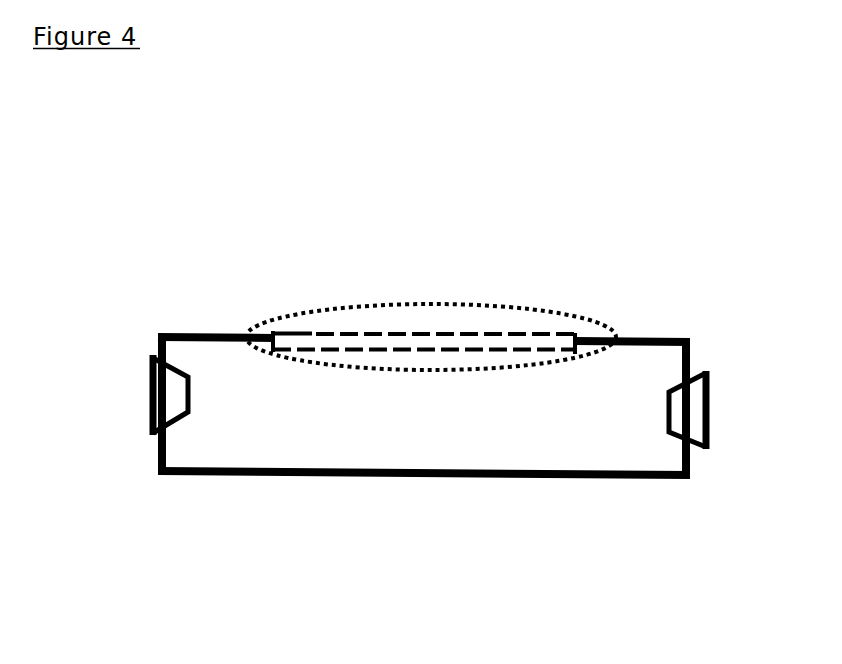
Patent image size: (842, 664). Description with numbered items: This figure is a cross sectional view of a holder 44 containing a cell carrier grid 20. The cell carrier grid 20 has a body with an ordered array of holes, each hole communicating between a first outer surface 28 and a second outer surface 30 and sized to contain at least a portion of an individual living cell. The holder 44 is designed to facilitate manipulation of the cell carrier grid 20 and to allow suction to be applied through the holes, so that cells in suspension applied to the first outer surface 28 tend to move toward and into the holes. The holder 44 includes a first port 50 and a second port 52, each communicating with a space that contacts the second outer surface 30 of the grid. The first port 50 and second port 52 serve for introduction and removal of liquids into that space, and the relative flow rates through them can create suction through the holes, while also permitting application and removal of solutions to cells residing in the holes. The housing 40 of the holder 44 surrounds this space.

The holder 44 is at (218, 48).
The housing 40 is at (250, 413).
The first outer surface 28 is at (280, 333).
The second outer surface 30 is at (437, 352).
The cell carrier grid 20 is at (480, 370).
The first port 50 is at (162, 408).
The second port 52 is at (680, 418).